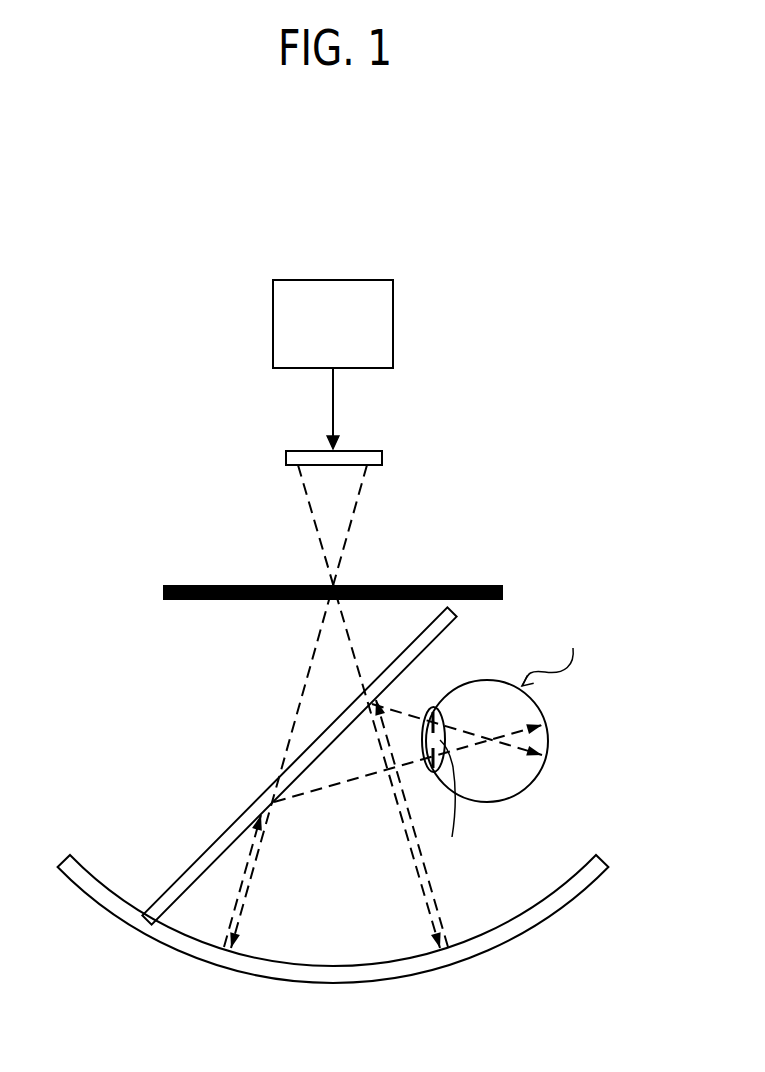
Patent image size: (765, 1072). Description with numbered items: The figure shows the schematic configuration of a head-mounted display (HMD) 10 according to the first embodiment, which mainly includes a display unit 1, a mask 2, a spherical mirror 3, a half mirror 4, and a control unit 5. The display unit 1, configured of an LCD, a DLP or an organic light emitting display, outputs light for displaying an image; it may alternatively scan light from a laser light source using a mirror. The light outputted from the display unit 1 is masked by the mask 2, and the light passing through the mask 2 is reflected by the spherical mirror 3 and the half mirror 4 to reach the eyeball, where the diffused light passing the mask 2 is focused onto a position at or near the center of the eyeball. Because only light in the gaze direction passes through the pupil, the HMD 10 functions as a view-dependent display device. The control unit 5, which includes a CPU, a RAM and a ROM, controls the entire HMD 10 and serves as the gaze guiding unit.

The head-mounted display 10 is at (348, 211).
The display unit 1 is at (382, 461).
The mask 2 is at (468, 585).
The spherical mirror 3 is at (85, 868).
The half mirror 4 is at (237, 821).
The control unit 5 is at (393, 325).